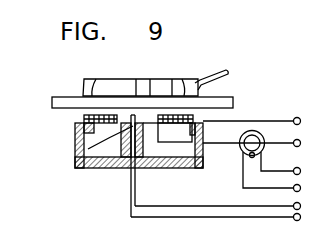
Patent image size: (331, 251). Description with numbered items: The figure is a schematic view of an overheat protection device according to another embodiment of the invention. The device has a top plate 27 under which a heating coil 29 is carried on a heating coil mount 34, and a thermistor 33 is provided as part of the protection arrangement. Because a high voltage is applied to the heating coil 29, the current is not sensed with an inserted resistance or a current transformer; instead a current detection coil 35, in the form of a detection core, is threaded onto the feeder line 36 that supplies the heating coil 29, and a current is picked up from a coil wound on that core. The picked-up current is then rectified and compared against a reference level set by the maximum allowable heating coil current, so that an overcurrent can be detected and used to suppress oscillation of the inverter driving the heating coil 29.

The top plate 27 is at (237, 106).
The heating coil 29 is at (78, 118).
The thermistor 33 is at (75, 150).
The heating coil mount 34 is at (100, 168).
The current detection coil 35 is at (272, 137).
The feeder line 36 is at (283, 147).